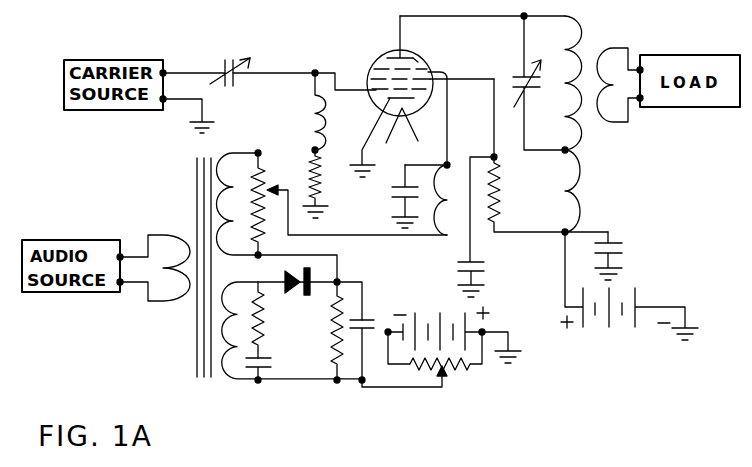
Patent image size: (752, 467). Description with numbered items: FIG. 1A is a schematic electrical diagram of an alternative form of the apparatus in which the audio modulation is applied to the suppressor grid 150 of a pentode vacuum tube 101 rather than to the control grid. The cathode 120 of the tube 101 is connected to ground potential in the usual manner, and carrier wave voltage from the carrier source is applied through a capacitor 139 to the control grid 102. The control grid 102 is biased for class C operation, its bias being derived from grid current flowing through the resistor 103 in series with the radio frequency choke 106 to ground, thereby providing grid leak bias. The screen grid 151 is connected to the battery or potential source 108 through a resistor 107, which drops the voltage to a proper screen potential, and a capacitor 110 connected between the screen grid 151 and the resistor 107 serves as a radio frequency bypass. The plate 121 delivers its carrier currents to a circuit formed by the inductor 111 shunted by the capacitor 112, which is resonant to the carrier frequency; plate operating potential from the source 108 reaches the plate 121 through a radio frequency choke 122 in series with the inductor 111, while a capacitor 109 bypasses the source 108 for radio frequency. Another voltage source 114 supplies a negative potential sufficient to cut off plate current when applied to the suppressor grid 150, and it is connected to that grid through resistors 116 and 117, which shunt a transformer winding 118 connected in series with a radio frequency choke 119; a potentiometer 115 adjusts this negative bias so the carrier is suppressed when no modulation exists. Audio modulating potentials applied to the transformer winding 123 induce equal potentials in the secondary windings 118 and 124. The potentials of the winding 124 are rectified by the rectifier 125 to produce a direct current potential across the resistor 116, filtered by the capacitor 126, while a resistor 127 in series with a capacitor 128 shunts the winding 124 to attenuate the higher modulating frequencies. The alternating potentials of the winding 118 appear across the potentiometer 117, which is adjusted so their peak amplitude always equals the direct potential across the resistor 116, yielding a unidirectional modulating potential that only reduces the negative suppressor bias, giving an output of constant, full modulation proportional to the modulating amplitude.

The capacitor 139 is at (224, 66).
The pentode vacuum tube 101 is at (390, 58).
The plate 121 is at (418, 60).
The screen grid 151 is at (392, 68).
The suppressor grid 150 is at (432, 72).
The control grid 102 is at (386, 88).
The cathode 120 is at (390, 104).
The radio frequency choke 106 is at (310, 125).
The resistor 103 is at (320, 176).
The secondary winding 124 is at (213, 378).
The transformer winding 123 is at (168, 300).
The secondary winding 118 is at (240, 148).
The potentiometer 117 is at (277, 176).
The rectifier 125 is at (284, 279).
The resistor 127 is at (289, 320).
The capacitor 128 is at (266, 381).
The resistor 116 is at (336, 325).
The capacitor 126 is at (371, 312).
The voltage source 114 is at (424, 320).
The potentiometer 115 is at (450, 368).
The radio frequency choke 119 is at (445, 174).
The resistor 107 is at (501, 193).
The capacitor 110 is at (478, 260).
The capacitor 112 is at (530, 83).
The inductor 111 is at (585, 50).
The radio frequency choke 122 is at (580, 200).
The capacitor 109 is at (611, 246).
The battery or potential source 108 is at (605, 316).